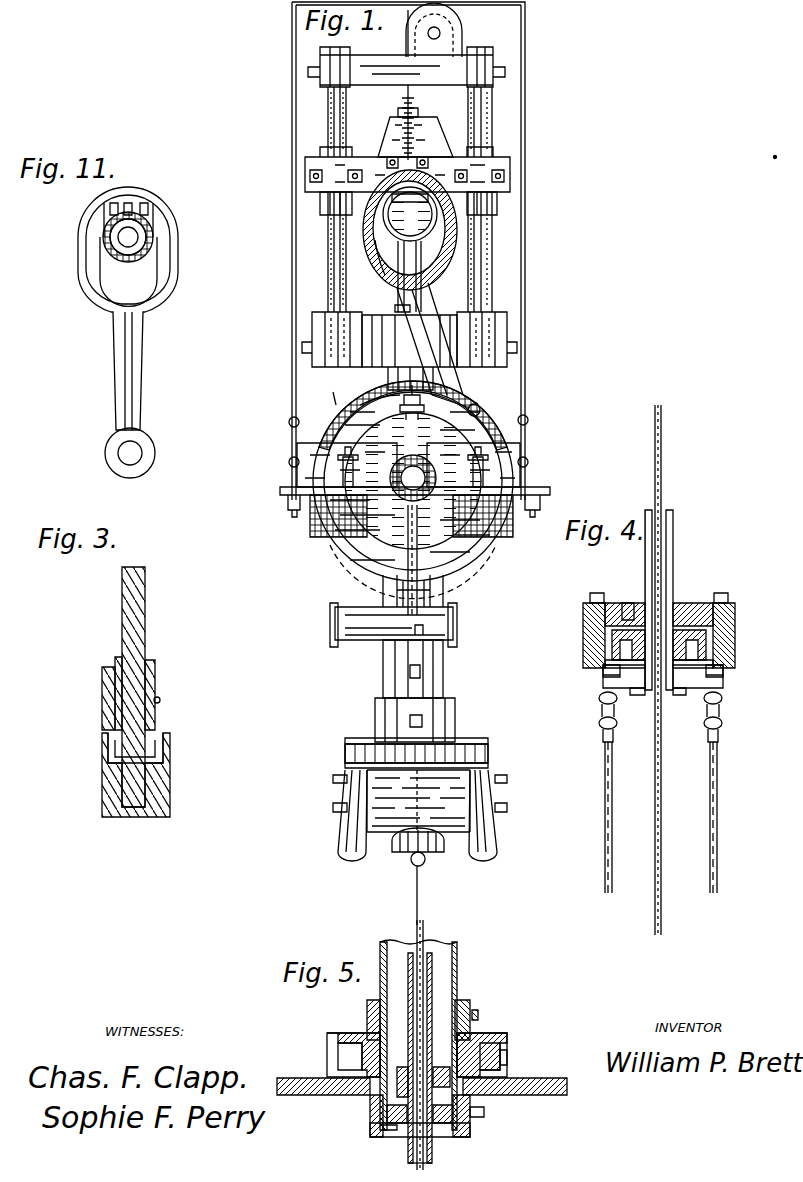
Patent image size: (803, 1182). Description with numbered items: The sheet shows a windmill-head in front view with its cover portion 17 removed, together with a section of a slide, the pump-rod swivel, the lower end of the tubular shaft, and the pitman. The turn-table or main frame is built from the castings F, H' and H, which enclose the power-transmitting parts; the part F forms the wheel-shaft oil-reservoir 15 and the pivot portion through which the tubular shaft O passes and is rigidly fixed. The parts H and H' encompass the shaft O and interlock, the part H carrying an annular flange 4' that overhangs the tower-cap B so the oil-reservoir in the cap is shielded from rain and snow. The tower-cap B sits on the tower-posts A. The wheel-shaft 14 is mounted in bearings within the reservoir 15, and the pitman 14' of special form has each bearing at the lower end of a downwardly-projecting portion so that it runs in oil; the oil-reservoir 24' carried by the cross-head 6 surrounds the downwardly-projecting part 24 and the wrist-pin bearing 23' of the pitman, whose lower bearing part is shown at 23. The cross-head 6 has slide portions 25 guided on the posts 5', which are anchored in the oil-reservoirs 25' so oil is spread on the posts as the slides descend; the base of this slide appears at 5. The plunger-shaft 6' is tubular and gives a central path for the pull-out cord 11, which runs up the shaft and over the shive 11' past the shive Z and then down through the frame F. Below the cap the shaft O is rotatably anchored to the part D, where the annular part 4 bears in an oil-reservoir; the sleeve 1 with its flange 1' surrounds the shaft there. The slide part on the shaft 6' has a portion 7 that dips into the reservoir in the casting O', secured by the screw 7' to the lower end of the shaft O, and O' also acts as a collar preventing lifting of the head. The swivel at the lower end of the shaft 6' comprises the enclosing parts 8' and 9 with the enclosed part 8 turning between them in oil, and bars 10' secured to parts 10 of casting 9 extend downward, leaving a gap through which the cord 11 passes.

In FIG. 5, the bearing sleeve 1 is at (381, 1035).
In FIG. 5, the sleeve flange 1' is at (365, 1022).
In FIG. 5, the downwardly-projecting annular part 4 is at (482, 1043).
In FIG. 4, the annular flange 4' is at (679, 704).
In FIG. 1, the base block 5 is at (409, 352).
In FIG. 3, the base block 5 is at (147, 775).
In FIG. 1, the posts or guides 5' is at (405, 199).
In FIG. 3, the posts or guides 5' is at (120, 687).
In FIG. 1, the cross-head 6 is at (400, 122).
In FIG. 3, the cross-head 6 is at (96, 698).
In FIG. 1, the plunger-shaft 6' is at (413, 488).
In FIG. 4, the plunger-shaft 6' is at (675, 599).
In FIG. 5, the plunger-shaft 6' is at (430, 1045).
In FIG. 5, the downwardly-projecting portion 7 is at (429, 1119).
In FIG. 5, the bearing screw 7' is at (464, 1133).
In FIG. 1, the inclosed part 8 is at (328, 389).
In FIG. 4, the inclosed part 8 is at (659, 621).
In FIG. 5, the inclosed part 8 is at (479, 1012).
In FIG. 4, the annular flange 8' is at (643, 652).
In FIG. 4, the inclosing part 9 is at (603, 672).
In FIG. 4, the parts of casting 9 10 is at (659, 717).
In FIG. 4, the straps or bars 10' is at (662, 817).
In FIG. 1, the pull-out cord 11 is at (440, 509).
In FIG. 4, the pull-out cord 11 is at (672, 670).
In FIG. 5, the pull-out cord 11 is at (420, 1045).
In FIG. 1, the shive 11' is at (444, 30).
In FIG. 1, the wheel-shaft 14 is at (413, 490).
In FIG. 1, the wheel rim 14' is at (368, 391).
In FIG. 1, the wheel-shaft oil-reservoir 15 is at (425, 500).
In FIG. 1, the cover portion 17 is at (527, 185).
In FIG. 11, the bearing housing 23 is at (145, 254).
In FIG. 11, the wrist-pin bearing 23' is at (152, 235).
In FIG. 1, the downwardly-projecting part of the cross-head 24 is at (447, 249).
In FIG. 11, the wrist-pin oil-reservoir 24' is at (95, 240).
In FIG. 1, the slide portions 25 is at (409, 203).
In FIG. 3, the slide portions 25 is at (152, 690).
In FIG. 1, the oil-reservoirs 25' is at (408, 324).
In FIG. 3, the oil-reservoirs 25' is at (155, 737).
In FIG. 1, the tower-posts A is at (338, 845).
In FIG. 1, the tower-cap B is at (420, 801).
In FIG. 5, the anchorage part D is at (536, 1088).
In FIG. 1, the main frame part F is at (383, 590).
In FIG. 1, the main frame part H is at (402, 733).
In FIG. 1, the main frame part H' is at (393, 650).
In FIG. 1, the tubular shaft O is at (387, 486).
In FIG. 5, the casting O' is at (364, 1120).
In FIG. 1, the shive Z is at (407, 16).